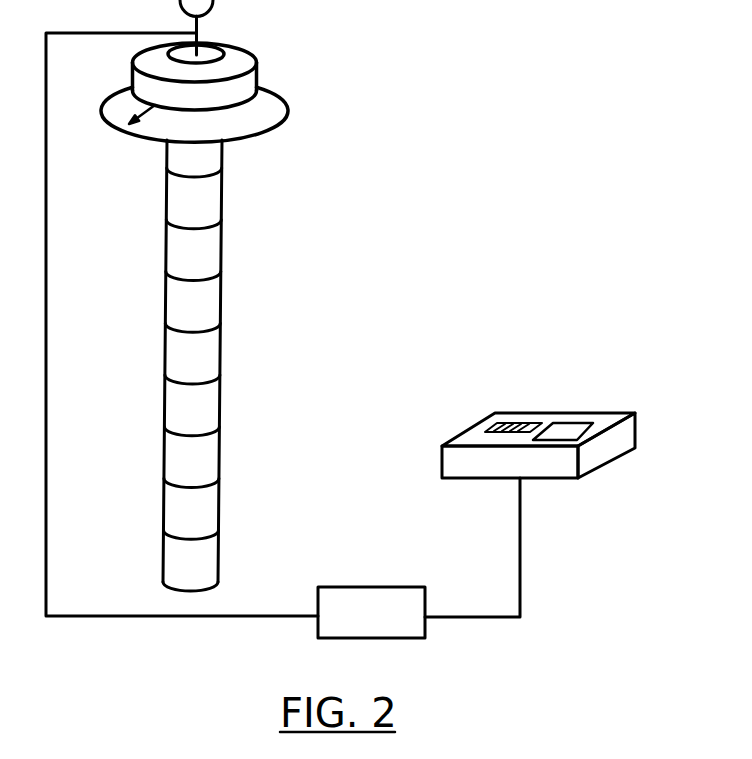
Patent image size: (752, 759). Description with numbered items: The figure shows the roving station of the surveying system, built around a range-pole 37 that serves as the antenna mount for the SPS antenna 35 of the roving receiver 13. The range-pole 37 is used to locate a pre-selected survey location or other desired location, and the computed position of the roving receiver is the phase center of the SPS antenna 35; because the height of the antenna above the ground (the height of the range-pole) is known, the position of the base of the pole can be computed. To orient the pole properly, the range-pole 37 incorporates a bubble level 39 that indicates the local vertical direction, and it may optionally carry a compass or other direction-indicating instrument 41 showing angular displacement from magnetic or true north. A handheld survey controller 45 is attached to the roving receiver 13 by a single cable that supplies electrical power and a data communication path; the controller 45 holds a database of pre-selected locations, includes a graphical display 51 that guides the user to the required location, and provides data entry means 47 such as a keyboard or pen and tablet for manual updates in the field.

The roving receiver 13 is at (370, 613).
The SPS antenna 35 is at (213, 15).
The range-pole 37 is at (195, 362).
The bubble level 39 is at (210, 95).
The compass 41 is at (230, 127).
The handheld survey controller 45 is at (602, 448).
The data entry means 47 is at (523, 428).
The graphical display 51 is at (568, 430).